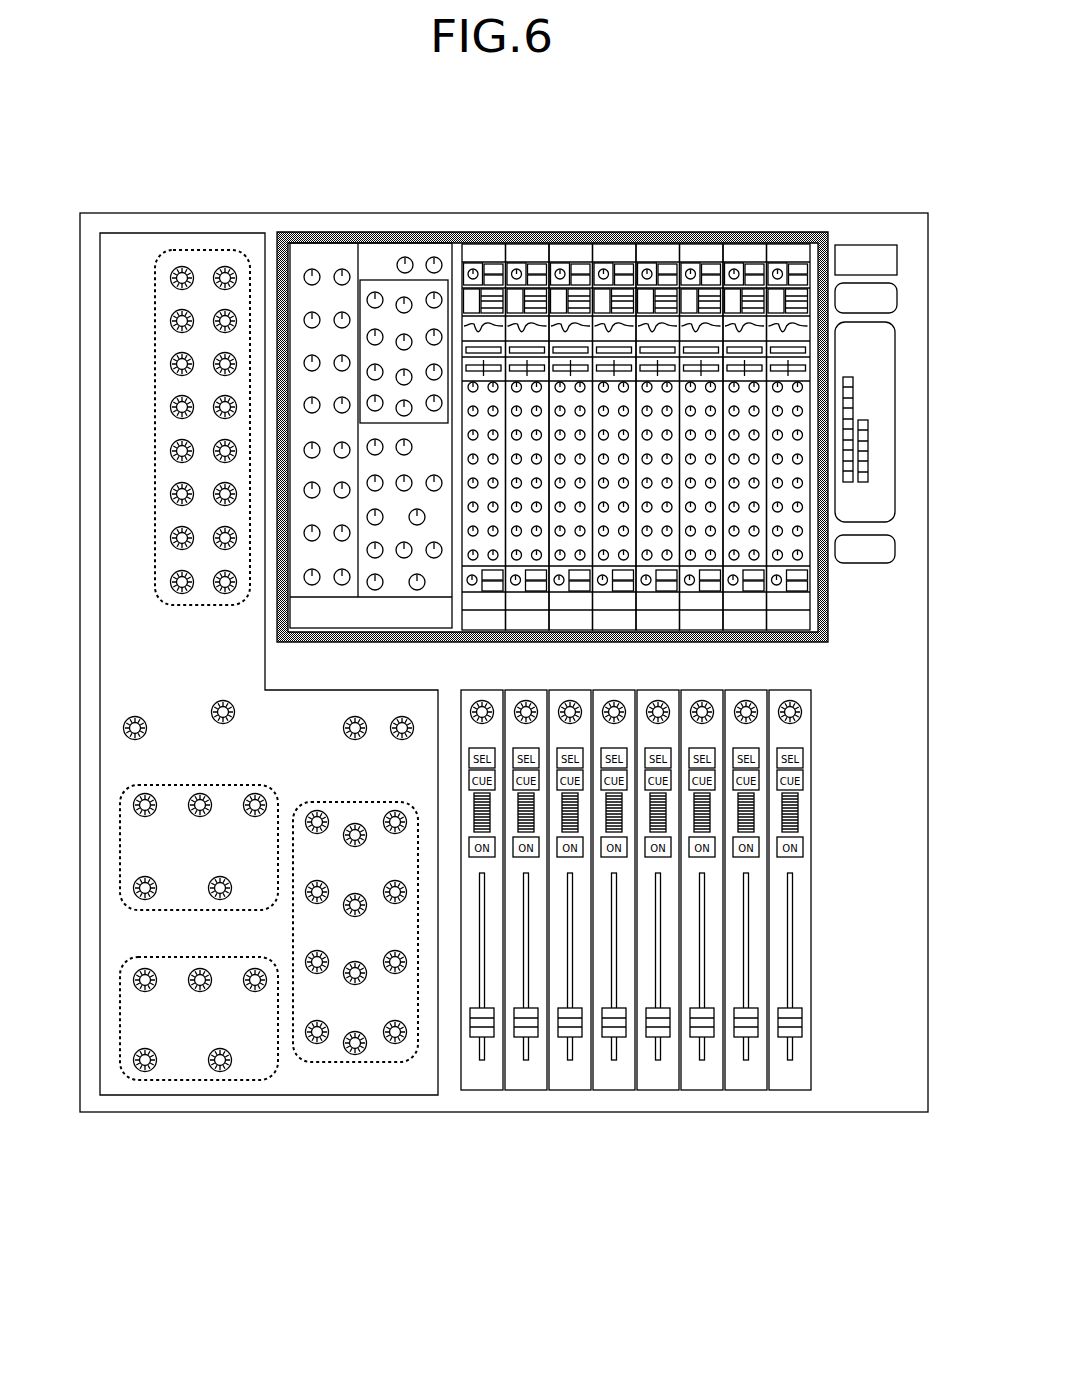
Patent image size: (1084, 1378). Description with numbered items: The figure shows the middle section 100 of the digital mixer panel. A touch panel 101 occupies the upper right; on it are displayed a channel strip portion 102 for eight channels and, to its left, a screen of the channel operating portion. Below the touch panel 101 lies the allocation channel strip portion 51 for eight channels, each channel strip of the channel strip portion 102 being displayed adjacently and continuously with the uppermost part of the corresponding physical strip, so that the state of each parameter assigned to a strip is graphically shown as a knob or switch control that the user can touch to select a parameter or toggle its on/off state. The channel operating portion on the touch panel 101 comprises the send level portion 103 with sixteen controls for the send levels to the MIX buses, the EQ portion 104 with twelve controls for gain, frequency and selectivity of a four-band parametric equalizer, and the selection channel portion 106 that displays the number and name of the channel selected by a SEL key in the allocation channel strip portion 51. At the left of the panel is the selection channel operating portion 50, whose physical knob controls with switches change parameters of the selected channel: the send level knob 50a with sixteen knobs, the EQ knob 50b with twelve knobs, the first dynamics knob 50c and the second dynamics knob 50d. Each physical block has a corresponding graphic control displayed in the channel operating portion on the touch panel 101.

The selection channel operating portion 50 is at (388, 676).
The send level knob 50a is at (190, 250).
The EQ knob 50b is at (312, 1063).
The first dynamics knob 50c is at (155, 1078).
The second dynamics knob 50d is at (125, 907).
The allocation channel strip portion 51 is at (583, 1090).
The middle section of the panel of the digital mixer 100 is at (532, 1113).
The touch panel 101 is at (581, 394).
The channel strip portion 102 is at (624, 245).
The send level portion 103 is at (312, 245).
The EQ portion 104 is at (388, 285).
The selection channel portion 106 is at (500, 404).